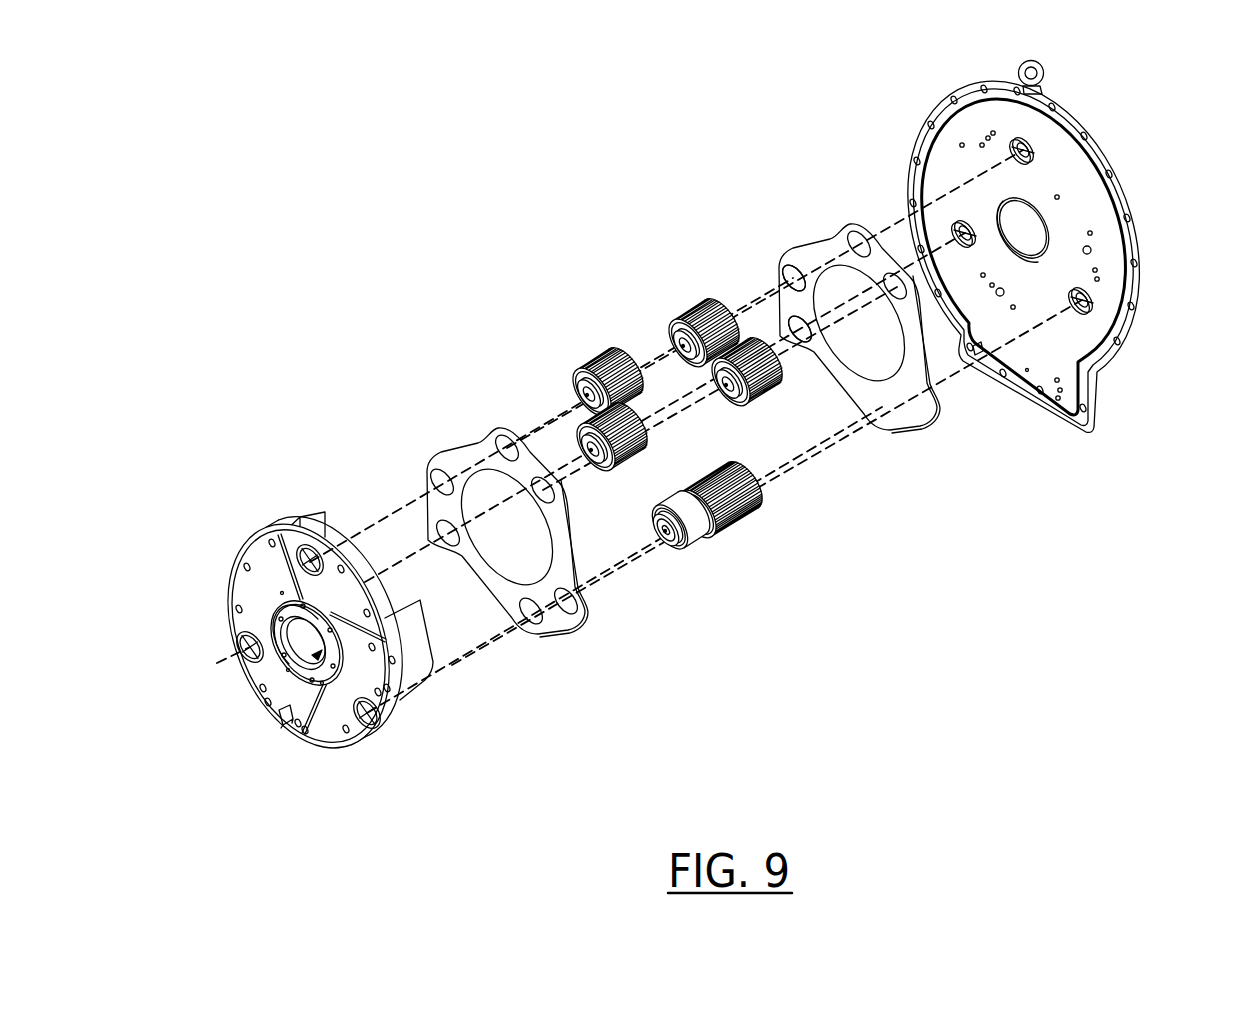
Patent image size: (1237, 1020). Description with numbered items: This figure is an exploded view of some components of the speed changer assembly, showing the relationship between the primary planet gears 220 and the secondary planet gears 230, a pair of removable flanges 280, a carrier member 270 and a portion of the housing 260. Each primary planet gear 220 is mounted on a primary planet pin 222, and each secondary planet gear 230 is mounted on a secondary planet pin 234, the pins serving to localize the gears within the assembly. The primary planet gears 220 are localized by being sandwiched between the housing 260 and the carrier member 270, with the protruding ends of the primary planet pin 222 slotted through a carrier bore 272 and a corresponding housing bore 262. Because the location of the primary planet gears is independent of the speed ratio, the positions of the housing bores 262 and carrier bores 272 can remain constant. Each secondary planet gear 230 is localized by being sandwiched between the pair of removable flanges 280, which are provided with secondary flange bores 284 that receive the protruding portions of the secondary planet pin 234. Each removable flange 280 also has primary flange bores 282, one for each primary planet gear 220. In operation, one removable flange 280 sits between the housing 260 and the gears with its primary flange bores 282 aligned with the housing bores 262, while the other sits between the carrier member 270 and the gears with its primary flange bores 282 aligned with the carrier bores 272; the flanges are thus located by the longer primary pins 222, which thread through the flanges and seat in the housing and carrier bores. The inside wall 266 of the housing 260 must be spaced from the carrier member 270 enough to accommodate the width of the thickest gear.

The primary planet gear 220 is at (757, 512).
The primary planet pin 222 is at (707, 528).
The secondary planet gear 230 is at (672, 492).
The secondary planet pin 234 is at (668, 540).
The housing 260 is at (1082, 452).
The housing bores 262 is at (1027, 148).
The inside wall 266 is at (973, 115).
The carrier member 270 is at (226, 497).
The carrier bores 272 is at (308, 558).
The removable flanges 280 is at (488, 413).
The primary flange bores 282 is at (796, 324).
The secondary flange bores 284 is at (793, 270).